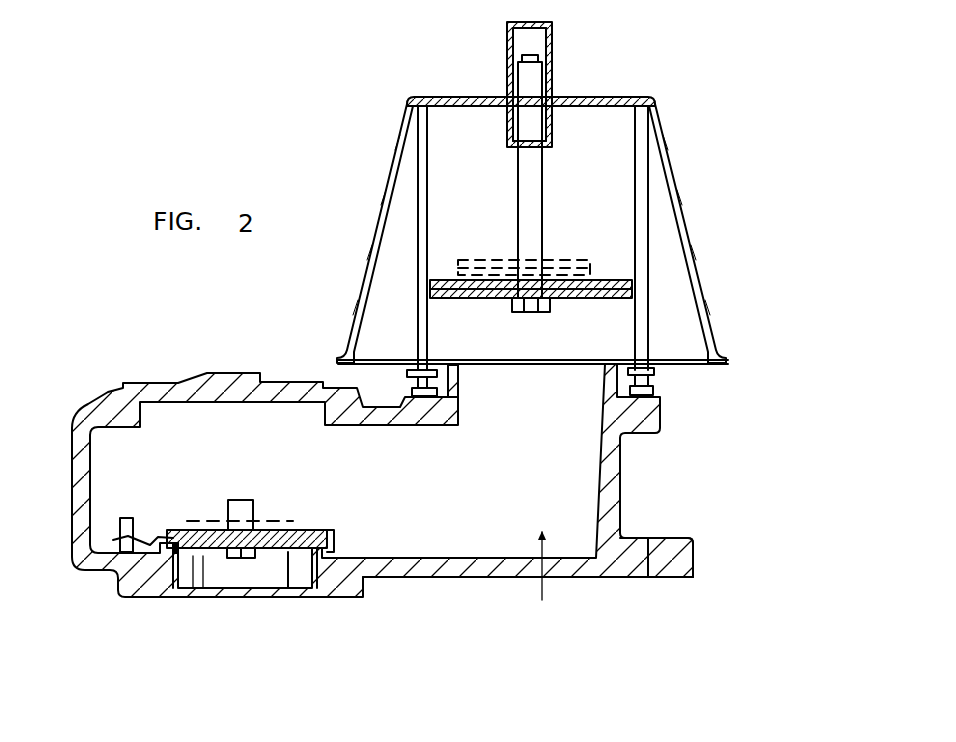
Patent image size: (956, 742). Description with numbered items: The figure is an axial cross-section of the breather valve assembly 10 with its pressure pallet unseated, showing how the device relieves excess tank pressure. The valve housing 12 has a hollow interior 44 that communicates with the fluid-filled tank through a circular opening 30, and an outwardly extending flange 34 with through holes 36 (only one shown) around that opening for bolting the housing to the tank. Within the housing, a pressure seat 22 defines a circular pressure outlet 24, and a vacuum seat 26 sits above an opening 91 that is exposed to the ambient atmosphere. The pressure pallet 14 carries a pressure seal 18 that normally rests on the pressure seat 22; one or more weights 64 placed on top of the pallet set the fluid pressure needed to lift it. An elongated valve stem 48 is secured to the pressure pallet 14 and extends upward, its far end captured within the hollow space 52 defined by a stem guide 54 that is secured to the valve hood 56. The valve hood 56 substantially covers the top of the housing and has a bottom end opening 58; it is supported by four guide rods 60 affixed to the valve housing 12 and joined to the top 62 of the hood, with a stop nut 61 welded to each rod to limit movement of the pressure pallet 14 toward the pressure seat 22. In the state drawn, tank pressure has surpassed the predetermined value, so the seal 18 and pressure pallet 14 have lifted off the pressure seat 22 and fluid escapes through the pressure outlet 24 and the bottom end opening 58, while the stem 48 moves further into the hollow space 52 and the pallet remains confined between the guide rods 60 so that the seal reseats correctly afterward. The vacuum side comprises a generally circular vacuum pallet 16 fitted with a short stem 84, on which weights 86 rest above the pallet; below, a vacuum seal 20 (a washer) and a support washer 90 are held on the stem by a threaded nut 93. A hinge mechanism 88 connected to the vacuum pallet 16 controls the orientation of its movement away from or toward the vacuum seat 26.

The breather valve assembly 10 is at (150, 362).
The valve housing 12 is at (88, 418).
The pressure pallet 14 is at (625, 282).
The vacuum pallet 16 is at (328, 534).
The pressure seal 18 is at (448, 316).
The vacuum seal 20 is at (190, 535).
The pressure seat 22 is at (460, 378).
The pressure outlet 24 is at (549, 352).
The vacuum seat 26 is at (175, 556).
The circular opening 30 is at (573, 578).
The outwardly extending flange 34 is at (688, 536).
The through holes 36 is at (649, 574).
The hollow interior 44 is at (462, 480).
The valve stem 48 is at (542, 216).
The hollow space 52 is at (508, 42).
The stem guide 54 is at (553, 48).
The valve hood 56 is at (392, 160).
The bottom end opening 58 is at (672, 370).
The guide rods 60 is at (428, 200).
The stop nuts 61 is at (407, 373).
The top 62 is at (612, 98).
The weights 64 is at (470, 262).
The short stem 84 is at (240, 500).
The weights 86 is at (296, 530).
The hinge mechanism 88 is at (148, 518).
The support washer 90 is at (240, 556).
The opening 91 is at (237, 623).
The threaded nut 93 is at (288, 552).